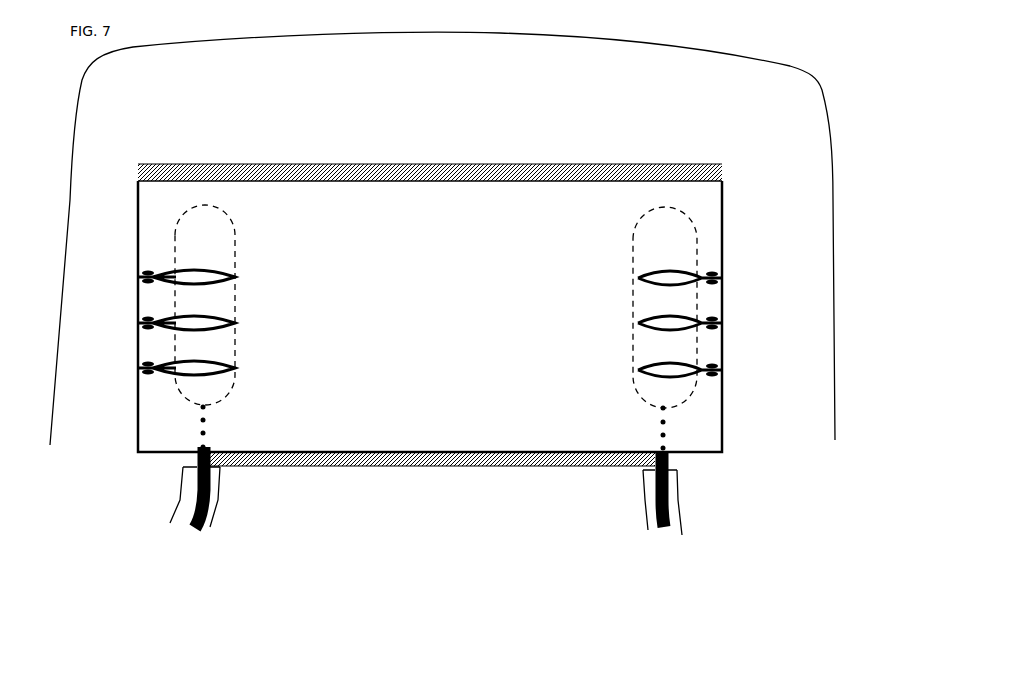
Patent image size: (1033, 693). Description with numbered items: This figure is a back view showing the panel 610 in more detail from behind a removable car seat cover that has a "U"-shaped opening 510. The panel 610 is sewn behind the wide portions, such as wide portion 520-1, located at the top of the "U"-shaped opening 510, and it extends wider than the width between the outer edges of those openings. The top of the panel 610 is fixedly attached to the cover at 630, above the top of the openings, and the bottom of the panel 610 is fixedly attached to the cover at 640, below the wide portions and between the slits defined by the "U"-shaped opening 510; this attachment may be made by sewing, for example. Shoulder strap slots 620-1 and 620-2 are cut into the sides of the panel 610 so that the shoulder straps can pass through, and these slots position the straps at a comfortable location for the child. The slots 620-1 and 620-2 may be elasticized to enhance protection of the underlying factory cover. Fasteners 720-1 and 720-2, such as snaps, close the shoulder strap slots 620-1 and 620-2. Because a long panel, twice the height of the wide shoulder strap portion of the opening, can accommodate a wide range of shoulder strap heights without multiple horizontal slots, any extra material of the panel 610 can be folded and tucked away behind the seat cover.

The "U"-shaped opening 510 is at (190, 528).
The wide portion 520-1 is at (647, 395).
The panel 610 is at (392, 423).
The shoulder strap slot 620-1 is at (654, 357).
The shoulder strap slot 620-2 is at (233, 357).
The top attachment 630 is at (425, 163).
The bottom attachment 640 is at (425, 470).
The fastener 720-1 is at (724, 360).
The fastener 720-2 is at (137, 357).